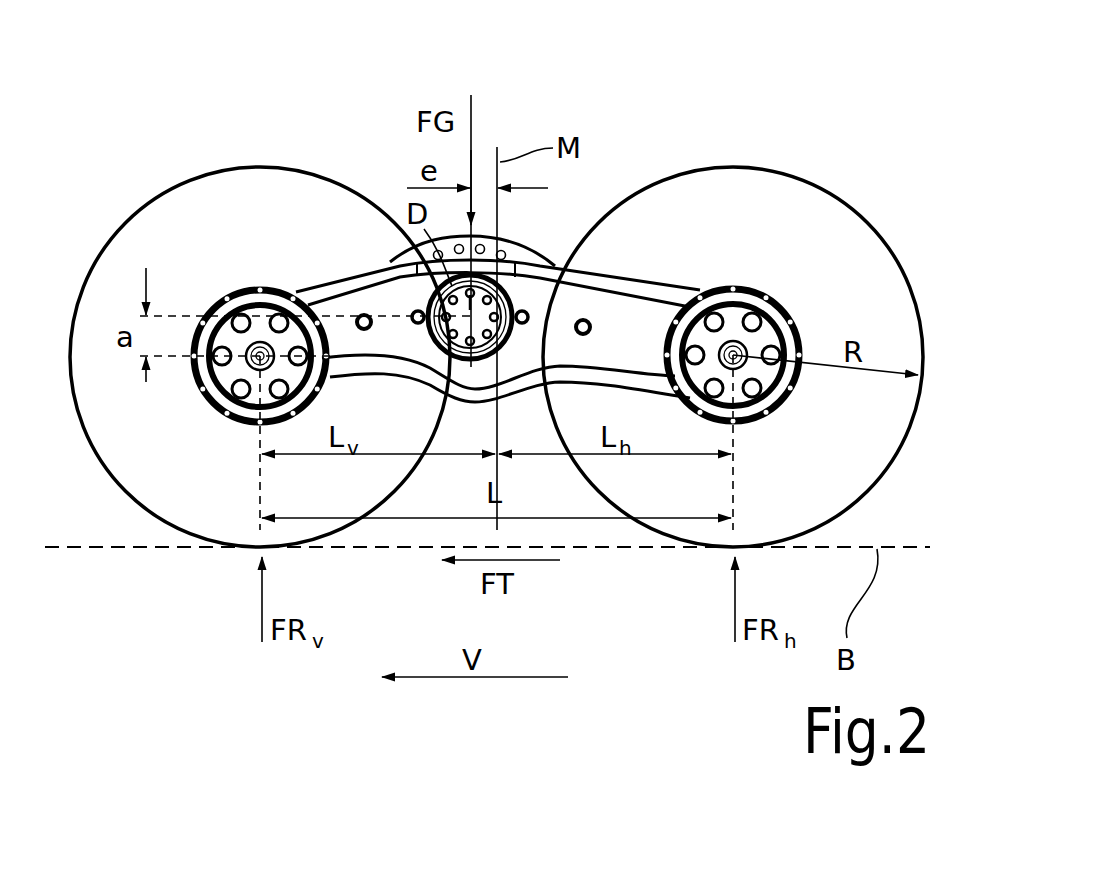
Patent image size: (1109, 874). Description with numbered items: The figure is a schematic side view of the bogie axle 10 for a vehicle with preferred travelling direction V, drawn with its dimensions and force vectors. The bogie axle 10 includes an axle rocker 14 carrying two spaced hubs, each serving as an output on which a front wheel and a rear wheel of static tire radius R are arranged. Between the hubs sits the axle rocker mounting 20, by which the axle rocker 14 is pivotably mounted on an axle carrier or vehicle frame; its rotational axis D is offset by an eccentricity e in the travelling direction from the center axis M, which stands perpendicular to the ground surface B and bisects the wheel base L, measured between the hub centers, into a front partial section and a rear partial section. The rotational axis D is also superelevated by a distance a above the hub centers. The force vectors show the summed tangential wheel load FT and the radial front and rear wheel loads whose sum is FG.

The bogie axle 10 is at (645, 172).
The axle rocker 14 is at (542, 293).
The axle rocker mounting 20 is at (426, 296).